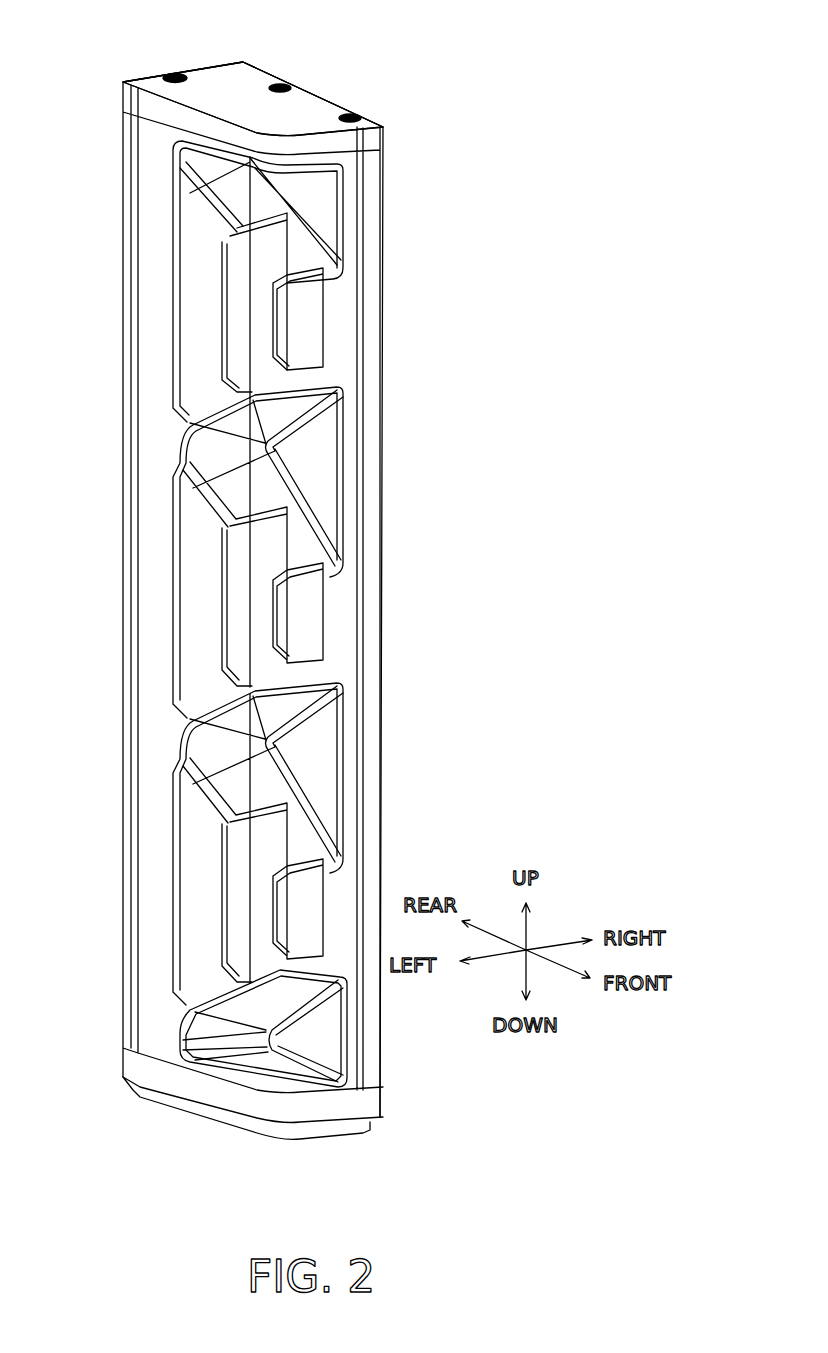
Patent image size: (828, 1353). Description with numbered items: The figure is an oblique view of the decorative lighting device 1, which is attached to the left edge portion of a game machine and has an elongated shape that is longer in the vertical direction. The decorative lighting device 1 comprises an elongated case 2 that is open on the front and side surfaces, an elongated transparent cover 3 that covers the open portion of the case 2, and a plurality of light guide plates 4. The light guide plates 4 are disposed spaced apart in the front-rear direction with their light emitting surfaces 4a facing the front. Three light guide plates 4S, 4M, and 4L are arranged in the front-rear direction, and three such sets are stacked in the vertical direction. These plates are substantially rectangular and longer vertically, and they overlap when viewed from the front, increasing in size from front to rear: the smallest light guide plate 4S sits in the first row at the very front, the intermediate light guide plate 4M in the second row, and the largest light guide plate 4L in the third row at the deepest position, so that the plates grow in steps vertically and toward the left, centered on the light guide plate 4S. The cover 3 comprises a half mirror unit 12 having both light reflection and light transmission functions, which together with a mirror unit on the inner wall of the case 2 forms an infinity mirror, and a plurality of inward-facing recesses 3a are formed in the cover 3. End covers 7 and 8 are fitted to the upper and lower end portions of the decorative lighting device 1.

The decorative lighting device 1 is at (348, 63).
The case 2 is at (383, 165).
The transparent cover 3 is at (318, 468).
The inward-facing recesses 3a is at (318, 768).
The light guide plates 4 is at (197, 542).
The light guide plate (largest) 4L is at (197, 245).
The light guide plate (intermediate) 4M is at (257, 298).
The light guide plate (smallest) 4S is at (307, 322).
The light emitting surfaces 4a is at (268, 277).
The end cover 7 is at (222, 80).
The end cover 8 is at (338, 1135).
The half mirror unit 12 is at (318, 443).